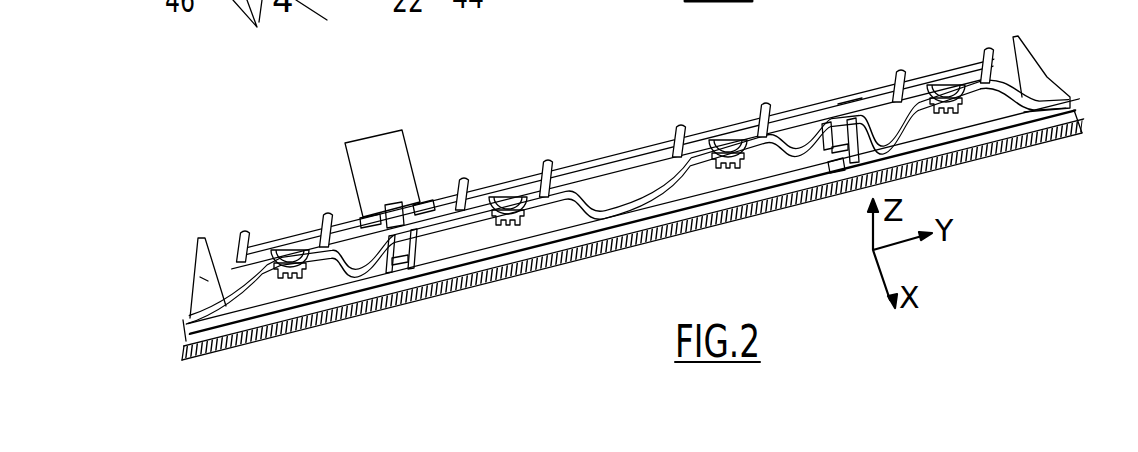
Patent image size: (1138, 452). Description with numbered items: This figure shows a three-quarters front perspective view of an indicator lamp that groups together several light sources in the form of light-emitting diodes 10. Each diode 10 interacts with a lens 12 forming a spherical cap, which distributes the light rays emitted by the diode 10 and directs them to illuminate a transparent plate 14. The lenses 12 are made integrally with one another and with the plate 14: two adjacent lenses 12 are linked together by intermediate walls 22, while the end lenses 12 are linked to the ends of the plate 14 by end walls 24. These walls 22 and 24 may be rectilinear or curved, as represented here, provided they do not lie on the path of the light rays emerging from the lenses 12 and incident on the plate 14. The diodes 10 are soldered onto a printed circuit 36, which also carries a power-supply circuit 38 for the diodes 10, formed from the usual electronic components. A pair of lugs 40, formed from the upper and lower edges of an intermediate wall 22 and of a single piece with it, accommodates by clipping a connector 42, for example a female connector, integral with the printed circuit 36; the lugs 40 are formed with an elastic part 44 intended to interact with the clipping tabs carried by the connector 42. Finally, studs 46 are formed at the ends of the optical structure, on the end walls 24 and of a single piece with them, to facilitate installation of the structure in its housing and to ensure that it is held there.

The light-emitting diode 10 is at (292, 260).
The lens 12 is at (297, 283).
The transparent plate 14 is at (627, 247).
The intermediate wall 22 is at (652, 187).
The end wall 24 is at (223, 310).
The printed circuit 36 is at (847, 96).
The power-supply circuit 38 is at (427, 205).
The lug 40 is at (428, 248).
The connector 42 is at (367, 160).
The elastic part 44 is at (413, 270).
The stud 46 is at (208, 281).